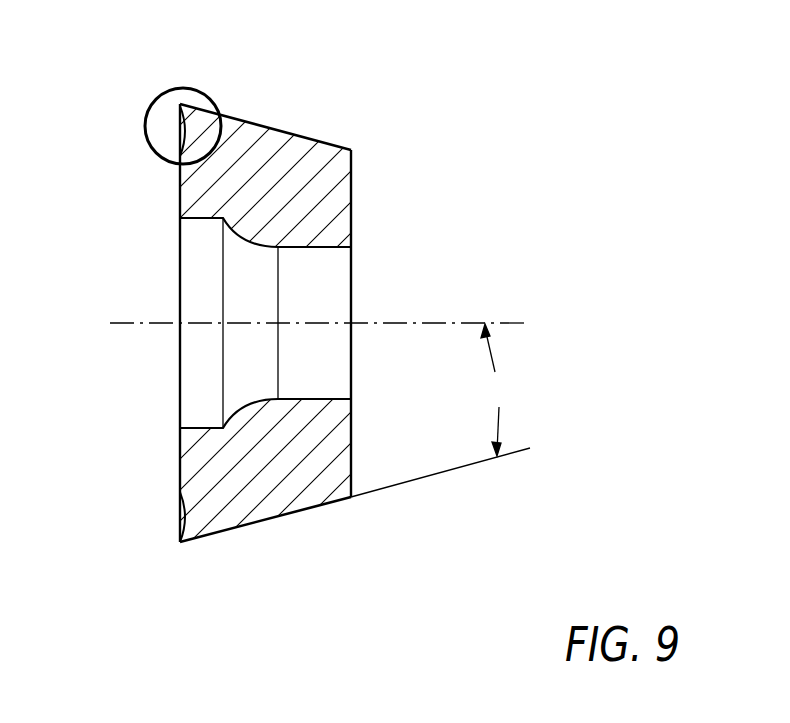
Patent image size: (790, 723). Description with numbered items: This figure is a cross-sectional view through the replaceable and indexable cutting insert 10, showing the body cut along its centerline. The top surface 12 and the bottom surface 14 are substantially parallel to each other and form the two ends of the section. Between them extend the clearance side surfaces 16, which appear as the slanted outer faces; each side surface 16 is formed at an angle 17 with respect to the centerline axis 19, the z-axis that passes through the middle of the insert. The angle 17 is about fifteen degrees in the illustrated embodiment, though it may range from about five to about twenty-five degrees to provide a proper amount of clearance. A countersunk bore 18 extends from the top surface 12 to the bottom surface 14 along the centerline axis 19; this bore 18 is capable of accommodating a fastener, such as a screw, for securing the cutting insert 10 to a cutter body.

The cutting insert 10 is at (158, 97).
The top surface 12 is at (180, 468).
The bottom surface 14 is at (352, 188).
The clearance side surface 16 is at (243, 122).
The angle 17 is at (440, 410).
The countersunk bore 18 is at (180, 238).
The centerline axis 19 is at (128, 322).